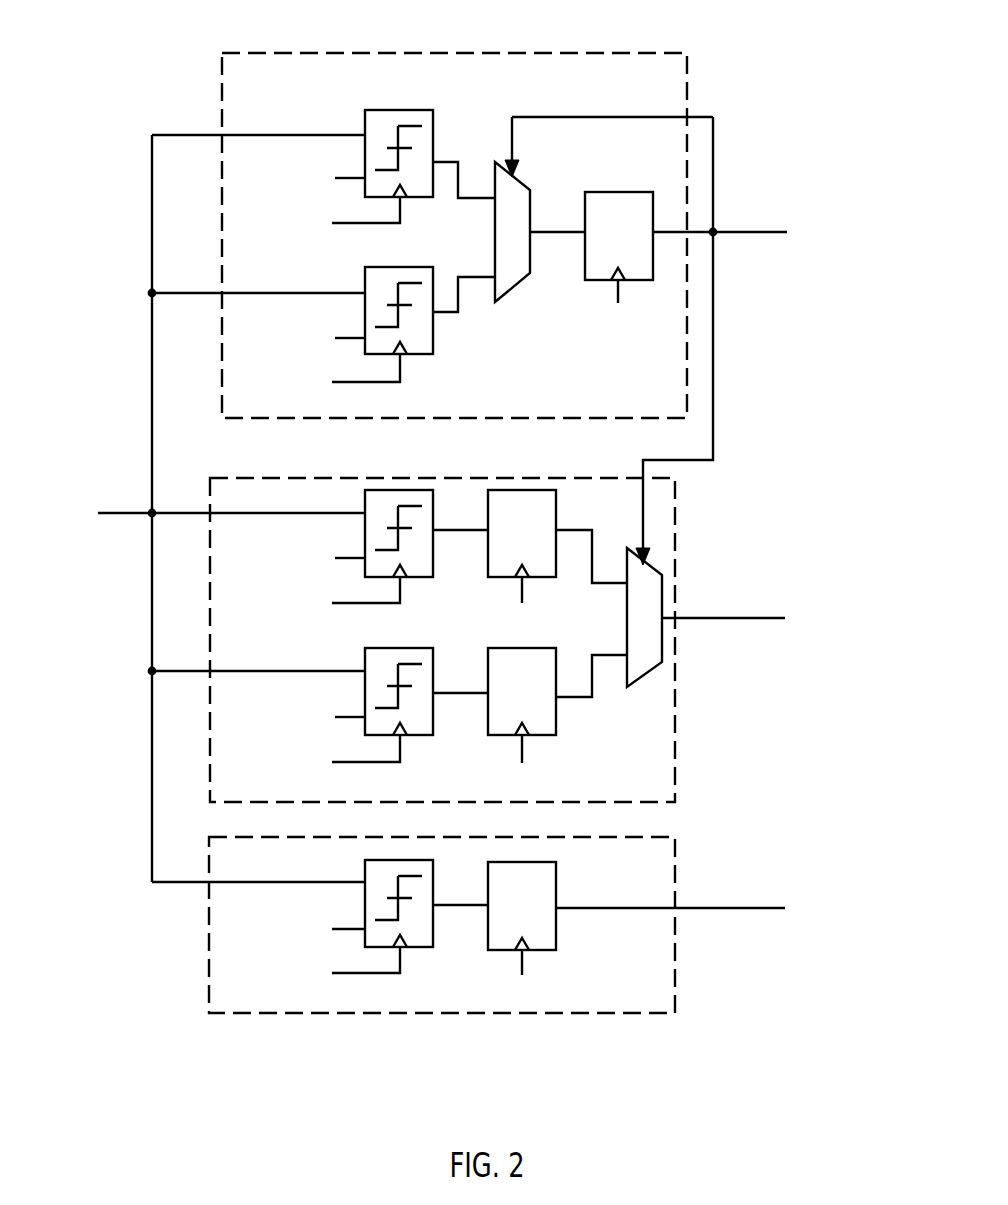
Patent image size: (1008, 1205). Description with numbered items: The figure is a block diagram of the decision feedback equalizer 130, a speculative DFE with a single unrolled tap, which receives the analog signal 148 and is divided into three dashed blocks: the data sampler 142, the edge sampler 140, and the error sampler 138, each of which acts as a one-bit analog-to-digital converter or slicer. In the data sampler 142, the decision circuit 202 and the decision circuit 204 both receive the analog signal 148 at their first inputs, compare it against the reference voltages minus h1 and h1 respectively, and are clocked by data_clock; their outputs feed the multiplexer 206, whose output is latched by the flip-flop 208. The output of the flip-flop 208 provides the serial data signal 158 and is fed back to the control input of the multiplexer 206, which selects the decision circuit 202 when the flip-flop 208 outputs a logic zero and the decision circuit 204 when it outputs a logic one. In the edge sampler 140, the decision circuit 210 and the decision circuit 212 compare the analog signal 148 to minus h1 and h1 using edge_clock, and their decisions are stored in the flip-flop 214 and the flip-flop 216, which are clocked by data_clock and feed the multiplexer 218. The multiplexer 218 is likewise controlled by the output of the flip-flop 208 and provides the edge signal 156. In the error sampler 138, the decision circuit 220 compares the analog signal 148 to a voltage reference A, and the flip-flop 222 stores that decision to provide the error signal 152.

The decision feedback equalizer 130 is at (183, 48).
The data sampler 142 is at (553, 53).
The decision circuit 202 is at (400, 110).
The decision circuit 204 is at (415, 355).
The multiplexer 206 is at (522, 283).
The flip-flop 208 is at (610, 192).
The serial data signal 158 is at (752, 234).
The analog signal 148 is at (124, 511).
The edge sampler 140 is at (675, 522).
The decision circuit 210 is at (401, 490).
The flip-flop 214 is at (523, 490).
The decision circuit 212 is at (415, 736).
The flip-flop 216 is at (556, 718).
The multiplexer 218 is at (657, 672).
The edge signal 156 is at (750, 620).
The error sampler 138 is at (675, 963).
The decision circuit 220 is at (415, 948).
The flip-flop 222 is at (556, 930).
The error signal 152 is at (730, 906).